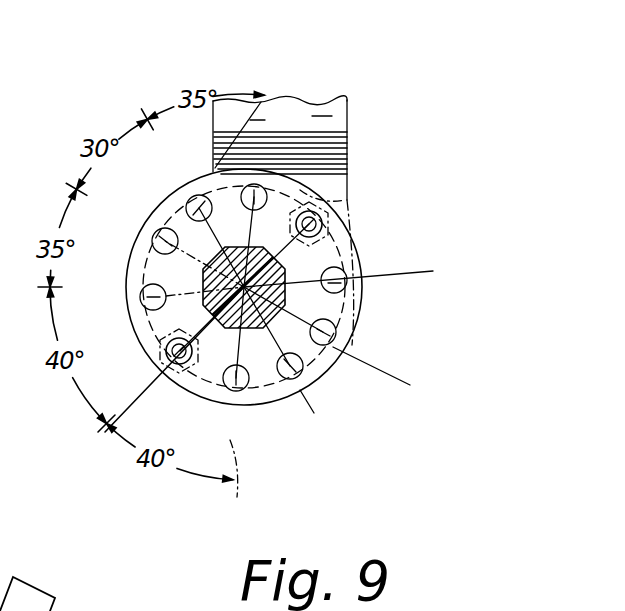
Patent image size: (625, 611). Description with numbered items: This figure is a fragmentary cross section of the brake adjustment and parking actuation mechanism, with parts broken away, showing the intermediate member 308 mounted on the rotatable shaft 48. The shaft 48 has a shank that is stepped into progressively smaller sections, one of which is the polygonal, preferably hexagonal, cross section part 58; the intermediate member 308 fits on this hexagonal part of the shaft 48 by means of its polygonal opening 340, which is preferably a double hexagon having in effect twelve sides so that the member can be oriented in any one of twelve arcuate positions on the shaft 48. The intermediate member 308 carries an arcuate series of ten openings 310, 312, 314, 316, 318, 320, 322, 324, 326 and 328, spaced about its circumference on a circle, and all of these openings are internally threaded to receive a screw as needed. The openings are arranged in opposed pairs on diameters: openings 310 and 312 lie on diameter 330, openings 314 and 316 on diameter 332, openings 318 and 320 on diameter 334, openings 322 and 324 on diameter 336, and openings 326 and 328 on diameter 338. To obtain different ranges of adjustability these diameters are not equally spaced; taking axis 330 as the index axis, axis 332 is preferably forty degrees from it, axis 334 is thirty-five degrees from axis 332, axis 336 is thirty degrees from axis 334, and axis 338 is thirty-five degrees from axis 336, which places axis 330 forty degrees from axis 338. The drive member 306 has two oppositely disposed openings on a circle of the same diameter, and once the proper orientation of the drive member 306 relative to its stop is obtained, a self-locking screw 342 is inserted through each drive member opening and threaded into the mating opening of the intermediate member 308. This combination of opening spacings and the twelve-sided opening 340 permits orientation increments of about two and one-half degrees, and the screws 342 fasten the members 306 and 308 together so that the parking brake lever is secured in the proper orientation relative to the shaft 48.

The rotatable shaft 48 is at (222, 338).
The polygonal cross section part 58 is at (207, 258).
The drive member 306 is at (312, 100).
The intermediate member 308 is at (300, 187).
The opening 310 is at (323, 214).
The opening 312 is at (170, 359).
The opening 314 is at (340, 322).
The opening 316 is at (140, 297).
The opening 318 is at (323, 346).
The opening 320 is at (157, 228).
The opening 322 is at (293, 379).
The opening 324 is at (201, 197).
The opening 326 is at (242, 390).
The opening 328 is at (254, 184).
The diameter 330 is at (358, 176).
The diameter 332 is at (365, 285).
The diameter 334 is at (408, 390).
The diameter 336 is at (318, 427).
The diameter 338 is at (258, 486).
The polygonal opening 340 is at (207, 307).
The self-locking screw 342 is at (326, 228).